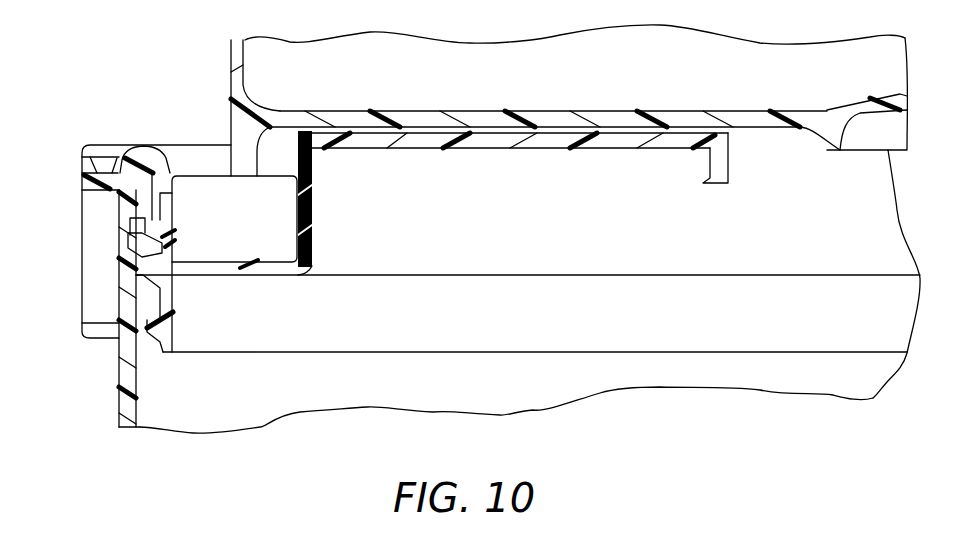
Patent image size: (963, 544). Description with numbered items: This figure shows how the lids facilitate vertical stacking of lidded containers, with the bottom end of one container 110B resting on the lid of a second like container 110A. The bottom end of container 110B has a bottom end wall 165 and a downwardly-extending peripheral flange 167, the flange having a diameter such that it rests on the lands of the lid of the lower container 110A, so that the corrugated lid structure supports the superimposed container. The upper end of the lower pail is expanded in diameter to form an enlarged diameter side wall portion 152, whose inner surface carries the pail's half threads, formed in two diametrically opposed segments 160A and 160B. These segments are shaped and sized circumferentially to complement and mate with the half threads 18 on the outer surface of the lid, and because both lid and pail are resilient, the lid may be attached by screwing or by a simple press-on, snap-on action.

The second like container 110A is at (98, 366).
The container 110B is at (222, 52).
The half threads 18 is at (150, 218).
The enlarged diameter side wall portion 152 is at (133, 375).
The thread segment 160A is at (150, 210).
The thread segment 160B is at (152, 280).
The bottom end wall 165 is at (467, 111).
The downwardly-extending peripheral flange 167 is at (262, 152).